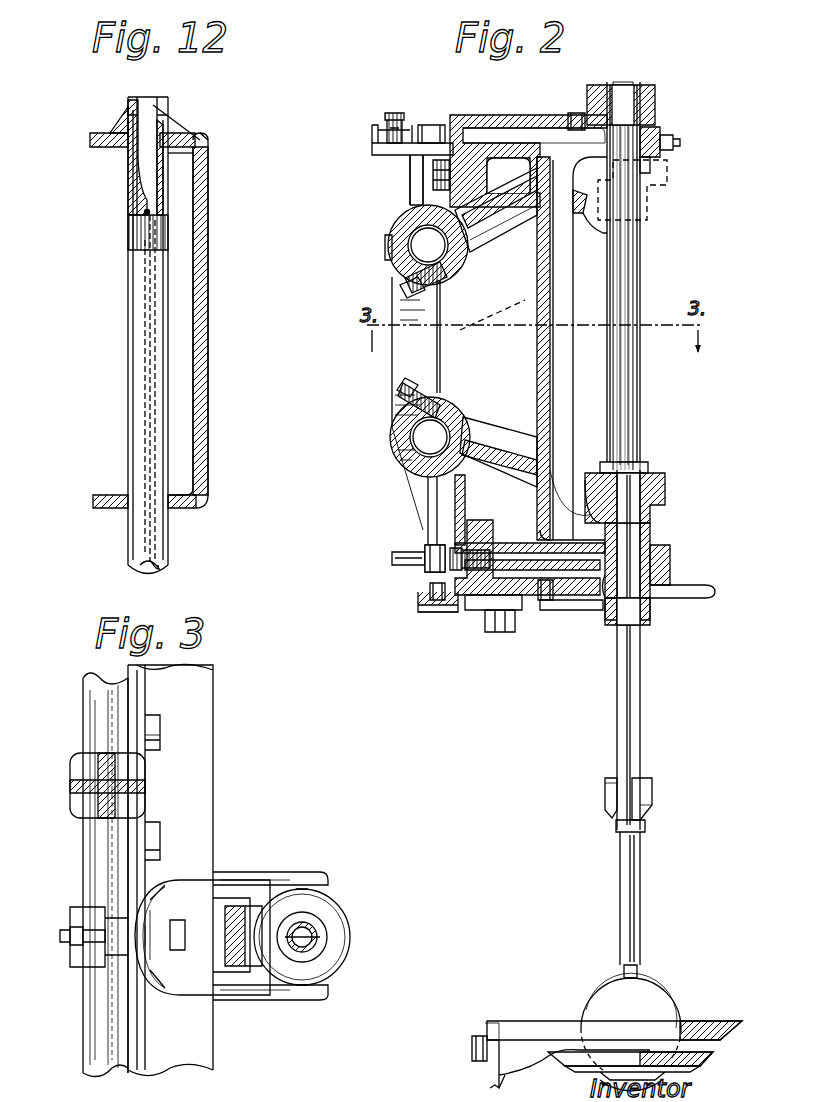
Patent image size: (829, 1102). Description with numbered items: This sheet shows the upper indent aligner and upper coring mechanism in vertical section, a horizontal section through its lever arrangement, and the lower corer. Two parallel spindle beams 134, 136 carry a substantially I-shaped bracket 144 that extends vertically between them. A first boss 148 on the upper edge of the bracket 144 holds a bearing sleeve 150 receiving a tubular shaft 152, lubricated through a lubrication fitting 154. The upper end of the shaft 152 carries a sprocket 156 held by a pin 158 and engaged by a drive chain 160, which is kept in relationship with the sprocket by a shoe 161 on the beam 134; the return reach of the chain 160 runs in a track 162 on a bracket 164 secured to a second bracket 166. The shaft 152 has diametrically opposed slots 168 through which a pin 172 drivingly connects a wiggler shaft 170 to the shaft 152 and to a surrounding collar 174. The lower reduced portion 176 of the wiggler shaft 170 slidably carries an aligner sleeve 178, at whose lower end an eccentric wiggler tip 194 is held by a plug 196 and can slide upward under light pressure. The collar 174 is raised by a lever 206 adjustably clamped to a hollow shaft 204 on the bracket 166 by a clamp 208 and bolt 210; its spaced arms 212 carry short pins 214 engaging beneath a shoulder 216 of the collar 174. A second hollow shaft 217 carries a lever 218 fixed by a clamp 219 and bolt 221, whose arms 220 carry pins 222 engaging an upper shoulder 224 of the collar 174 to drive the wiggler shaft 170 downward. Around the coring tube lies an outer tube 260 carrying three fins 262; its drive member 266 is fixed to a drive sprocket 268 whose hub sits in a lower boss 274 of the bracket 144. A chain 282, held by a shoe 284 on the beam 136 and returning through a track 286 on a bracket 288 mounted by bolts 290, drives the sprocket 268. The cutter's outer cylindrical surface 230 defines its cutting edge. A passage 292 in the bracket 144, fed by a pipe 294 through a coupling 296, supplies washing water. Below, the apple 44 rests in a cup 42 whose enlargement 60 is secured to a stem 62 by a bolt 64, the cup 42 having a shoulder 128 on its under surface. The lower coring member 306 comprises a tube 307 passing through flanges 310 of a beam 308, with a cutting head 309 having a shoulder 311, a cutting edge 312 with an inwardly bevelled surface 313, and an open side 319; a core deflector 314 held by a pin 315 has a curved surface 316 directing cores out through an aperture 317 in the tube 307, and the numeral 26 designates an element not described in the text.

In FIG. 12, the connector assembly 26 is at (206, 508).
In FIG. 2, the cup 42 is at (730, 1020).
In FIG. 2, the apple 44 is at (668, 1000).
In FIG. 2, the enlargement 60 is at (518, 1030).
In FIG. 2, the stem 62 is at (487, 1068).
In FIG. 2, the bolt 64 is at (472, 1050).
In FIG. 2, the shoulder 128 is at (702, 1063).
In FIG. 2, the spindle beam 134 is at (470, 115).
In FIG. 3, the spindle beam 136 is at (200, 762).
In FIG. 2, the spindle beam 136 is at (470, 608).
In FIG. 3, the I-shaped bracket 144 is at (238, 906).
In FIG. 2, the I-shaped bracket 144 is at (537, 305).
In FIG. 2, the first boss 148 is at (662, 133).
In FIG. 2, the bearing sleeve 150 is at (652, 163).
In FIG. 3, the tubular shaft 152 is at (318, 915).
In FIG. 2, the tubular shaft 152 is at (635, 82).
In FIG. 2, the lubrication fitting 154 is at (682, 142).
In FIG. 2, the sprocket 156 is at (605, 85).
In FIG. 2, the pin 158 is at (577, 112).
In FIG. 2, the drive chain 160 is at (393, 113).
In FIG. 2, the shoe 161 is at (548, 115).
In FIG. 2, the track 162 is at (372, 132).
In FIG. 2, the bracket 164 is at (372, 149).
In FIG. 3, the second bracket 166 is at (70, 785).
In FIG. 2, the second bracket 166 is at (405, 368).
In FIG. 2, the slots 168 is at (640, 266).
In FIG. 2, the wiggler shaft 170 is at (628, 460).
In FIG. 3, the pin 172 is at (318, 937).
In FIG. 2, the pin 172 is at (645, 462).
In FIG. 3, the collar 174 is at (335, 922).
In FIG. 2, the collar 174 is at (667, 490).
In FIG. 2, the reduced-diameter portion 176 is at (432, 176).
In FIG. 2, the aligner sleeve 178 is at (642, 897).
In FIG. 2, the wiggler tip 194 is at (622, 975).
In FIG. 2, the plug 196 is at (640, 975).
In FIG. 3, the hollow shaft 204 is at (92, 722).
In FIG. 2, the hollow shaft 204 is at (410, 437).
In FIG. 3, the lever 206 is at (188, 995).
In FIG. 2, the lever 206 is at (505, 435).
In FIG. 3, the clamp 208 is at (80, 907).
In FIG. 3, the bolt 210 is at (68, 945).
In FIG. 3, the arms 212 is at (268, 875).
In FIG. 2, the arms 212 is at (590, 480).
In FIG. 3, the pins 214 is at (330, 880).
In FIG. 2, the shoulder 216 is at (652, 515).
In FIG. 2, the second hollow shaft 217 is at (388, 240).
In FIG. 2, the lever 218 is at (498, 240).
In FIG. 2, the clamp 219 is at (388, 252).
In FIG. 2, the arms 220 is at (600, 235).
In FIG. 2, the bolt 221 is at (400, 290).
In FIG. 2, the pins 222 is at (667, 170).
In FIG. 2, the upper shoulder 224 is at (650, 468).
In FIG. 2, the outer cylindrical surface 230 is at (647, 825).
In FIG. 2, the outer tube 260 is at (642, 724).
In FIG. 2, the fins 262 is at (654, 794).
In FIG. 2, the drive member 266 is at (655, 625).
In FIG. 2, the drive sprocket 268 is at (692, 598).
In FIG. 2, the lower boss 274 is at (672, 555).
In FIG. 2, the chain 282 is at (428, 590).
In FIG. 2, the shoe 284 is at (545, 610).
In FIG. 2, the track 286 is at (418, 603).
In FIG. 2, the bracket 288 is at (420, 612).
In FIG. 2, the bolts 290 is at (485, 628).
In FIG. 2, the passage 292 is at (490, 540).
In FIG. 2, the pipe 294 is at (392, 557).
In FIG. 2, the coupling 296 is at (425, 545).
In FIG. 12, the lower coring member 306 is at (126, 288).
In FIG. 12, the tube 307 is at (142, 375).
In FIG. 12, the beam 308 is at (210, 338).
In FIG. 12, the cutting head 309 is at (118, 120).
In FIG. 12, the flanges 310 is at (105, 135).
In FIG. 12, the shoulder 311 is at (115, 147).
In FIG. 12, the cutting edge 312 is at (130, 97).
In FIG. 12, the bevelled surface 313 is at (148, 97).
In FIG. 12, the core deflector 314 is at (126, 182).
In FIG. 12, the pin 315 is at (144, 212).
In FIG. 12, the curved surface 316 is at (160, 176).
In FIG. 12, the aperture 317 is at (206, 143).
In FIG. 12, the open side 319 is at (170, 120).